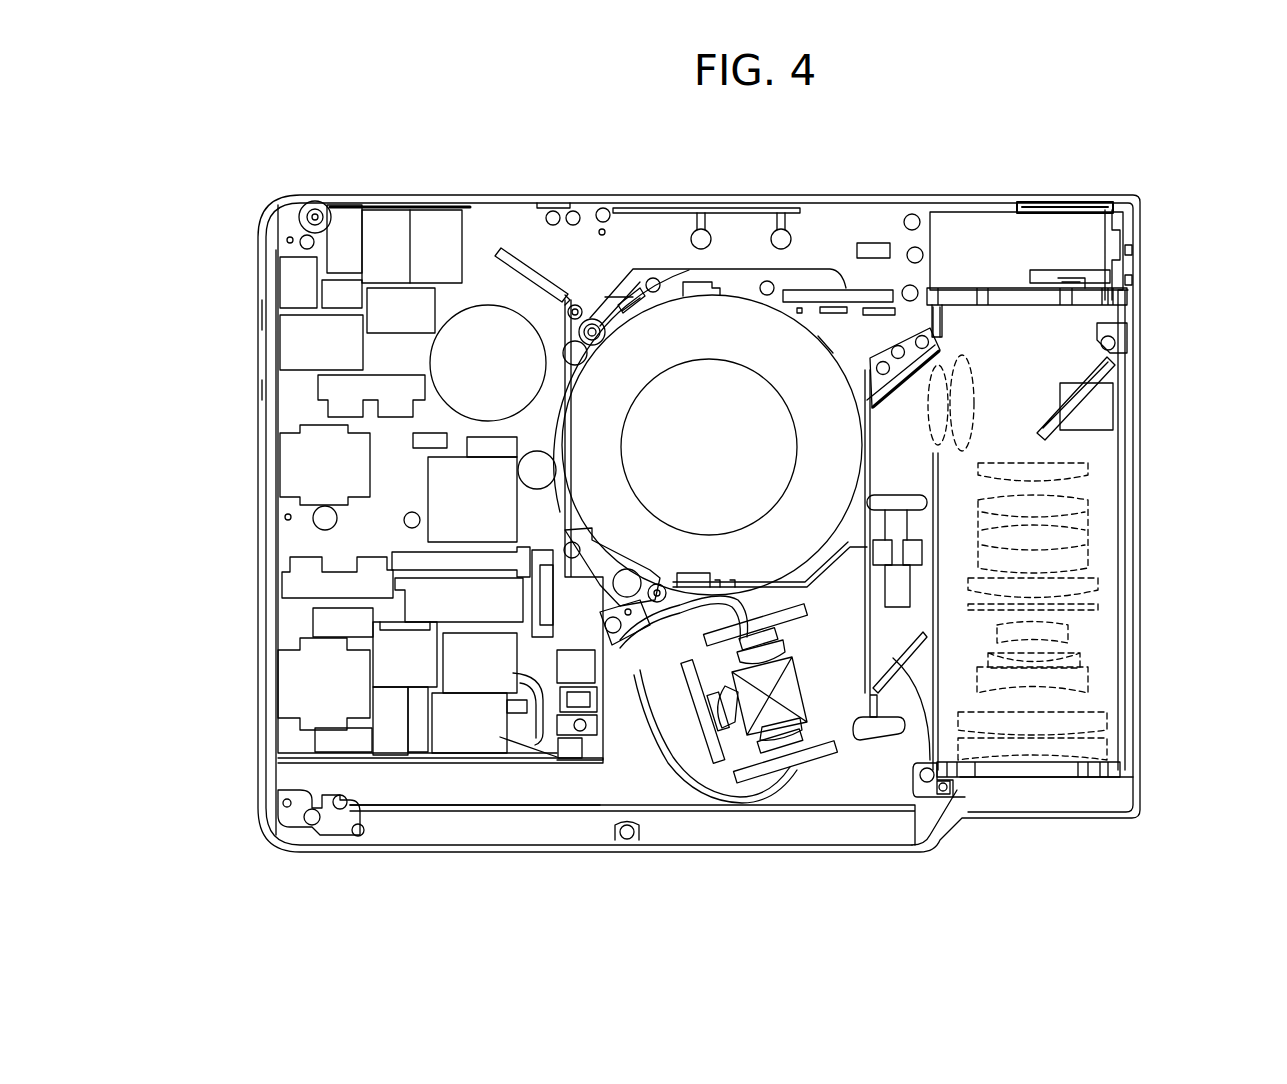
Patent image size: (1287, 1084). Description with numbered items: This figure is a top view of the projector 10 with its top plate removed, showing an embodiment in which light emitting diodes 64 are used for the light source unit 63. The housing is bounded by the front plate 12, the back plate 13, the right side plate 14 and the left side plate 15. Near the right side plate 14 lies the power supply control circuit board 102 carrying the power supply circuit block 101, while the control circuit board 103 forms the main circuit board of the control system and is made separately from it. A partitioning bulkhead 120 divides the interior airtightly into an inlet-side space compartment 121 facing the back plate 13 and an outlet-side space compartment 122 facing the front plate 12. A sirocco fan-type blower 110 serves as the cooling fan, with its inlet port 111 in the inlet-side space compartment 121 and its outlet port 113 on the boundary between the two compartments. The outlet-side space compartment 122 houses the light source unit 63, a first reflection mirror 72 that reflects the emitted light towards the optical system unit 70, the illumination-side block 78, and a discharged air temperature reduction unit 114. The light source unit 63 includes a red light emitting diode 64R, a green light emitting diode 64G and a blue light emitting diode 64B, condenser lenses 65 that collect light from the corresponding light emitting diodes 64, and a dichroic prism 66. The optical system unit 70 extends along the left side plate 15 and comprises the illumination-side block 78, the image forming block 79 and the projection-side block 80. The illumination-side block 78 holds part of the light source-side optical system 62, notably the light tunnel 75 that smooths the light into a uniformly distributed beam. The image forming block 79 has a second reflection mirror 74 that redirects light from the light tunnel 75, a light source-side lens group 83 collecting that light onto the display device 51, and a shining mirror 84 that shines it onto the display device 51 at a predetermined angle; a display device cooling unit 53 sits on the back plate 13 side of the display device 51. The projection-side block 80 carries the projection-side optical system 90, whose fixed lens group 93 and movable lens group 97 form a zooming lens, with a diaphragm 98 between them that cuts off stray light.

The projector 10 is at (1160, 182).
The front plate 12 is at (555, 852).
The back plate 13 is at (488, 195).
The right side plate 14 is at (263, 568).
The left side plate 15 is at (1140, 333).
The display device 51 is at (1027, 297).
The display device cooling unit 53 is at (960, 243).
The light source-side optical system 62 is at (913, 465).
The light source unit 63 is at (800, 773).
The light emitting diodes 64 is at (726, 761).
The red light emitting diode 64R is at (797, 623).
The green light emitting diode 64G is at (700, 725).
The blue light emitting diode 64B is at (780, 768).
The condenser lenses 65 is at (775, 647).
The dichroic prism 66 is at (860, 745).
The optical system unit 70 is at (1103, 456).
The first reflection mirror 72 is at (930, 760).
The second reflection mirror 74 is at (871, 360).
The light tunnel 75 is at (893, 558).
The illumination-side block 78 is at (905, 348).
The image forming block 79 is at (1078, 296).
The projection-side block 80 is at (1108, 700).
The light source-side lens group 83 is at (985, 410).
The shining mirror 84 is at (1095, 378).
The projection-side optical system 90 is at (1095, 484).
The fixed lens group 93 is at (1072, 526).
The movable lens group 97 is at (1082, 666).
The diaphragm 98 is at (1092, 613).
The power supply circuit block 101 is at (300, 347).
The power supply control circuit board 102 is at (300, 627).
The control circuit board 103 is at (597, 262).
The blower 110 is at (678, 325).
The inlet port 111 is at (740, 417).
The outlet port 113 is at (740, 720).
The discharged air temperature reduction unit 114 is at (522, 830).
The partitioning bulkhead 120 is at (397, 763).
The inlet-side space compartment 121 is at (642, 256).
The outlet-side space compartment 122 is at (467, 773).